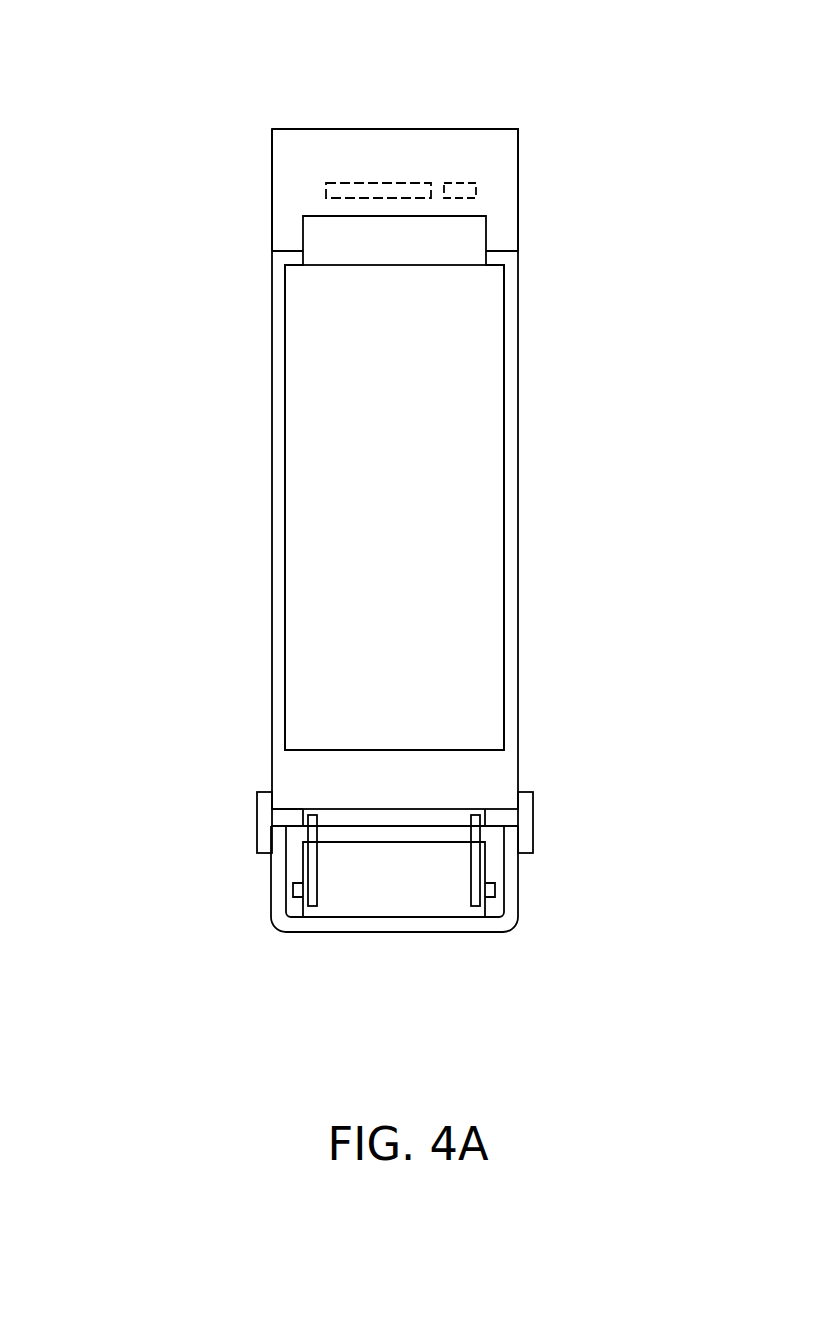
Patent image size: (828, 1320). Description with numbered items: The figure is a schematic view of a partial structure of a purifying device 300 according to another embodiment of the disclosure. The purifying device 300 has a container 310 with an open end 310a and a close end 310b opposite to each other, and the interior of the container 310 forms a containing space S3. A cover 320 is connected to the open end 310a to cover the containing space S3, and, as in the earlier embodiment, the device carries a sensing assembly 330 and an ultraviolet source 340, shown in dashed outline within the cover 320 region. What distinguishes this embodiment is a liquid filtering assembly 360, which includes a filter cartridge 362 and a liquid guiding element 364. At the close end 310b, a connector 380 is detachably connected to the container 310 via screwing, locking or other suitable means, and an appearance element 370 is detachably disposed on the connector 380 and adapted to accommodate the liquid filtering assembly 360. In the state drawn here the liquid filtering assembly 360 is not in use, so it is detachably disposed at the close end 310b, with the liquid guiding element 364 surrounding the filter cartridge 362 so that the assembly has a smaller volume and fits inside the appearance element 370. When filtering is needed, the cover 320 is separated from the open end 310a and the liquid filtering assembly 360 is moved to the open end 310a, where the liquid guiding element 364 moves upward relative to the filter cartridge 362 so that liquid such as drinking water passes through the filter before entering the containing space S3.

The purifying device 300 is at (371, 559).
The container 310 is at (278, 443).
The open end 310a is at (233, 252).
The close end 310b is at (233, 768).
The containing space S3 is at (335, 525).
The cover 320 is at (278, 190).
The sensing assembly 330 is at (460, 180).
The ultraviolet source 340 is at (373, 180).
The liquid filtering assembly 360 is at (394, 927).
The filter cartridge 362 is at (404, 895).
The liquid guiding element 364 is at (313, 880).
The appearance element 370 is at (475, 923).
The connector 380 is at (523, 818).